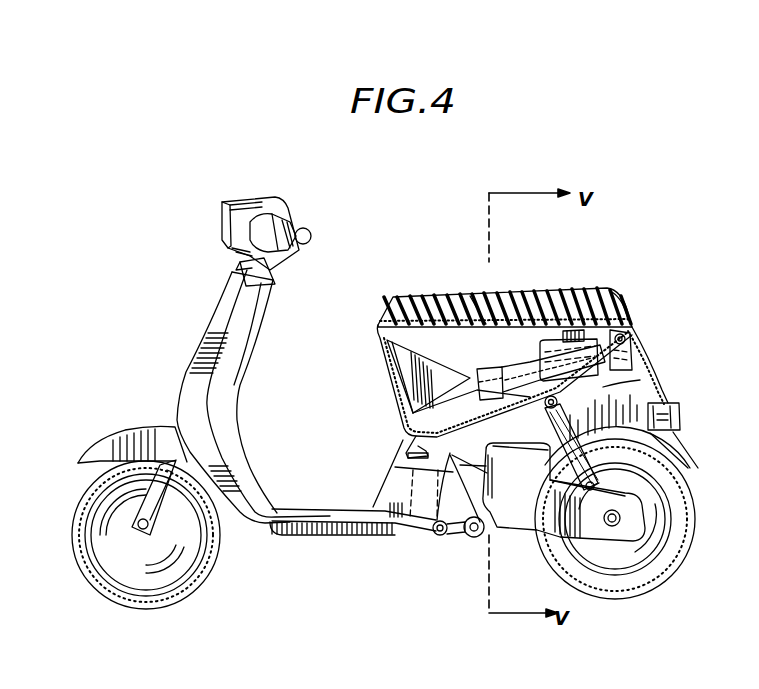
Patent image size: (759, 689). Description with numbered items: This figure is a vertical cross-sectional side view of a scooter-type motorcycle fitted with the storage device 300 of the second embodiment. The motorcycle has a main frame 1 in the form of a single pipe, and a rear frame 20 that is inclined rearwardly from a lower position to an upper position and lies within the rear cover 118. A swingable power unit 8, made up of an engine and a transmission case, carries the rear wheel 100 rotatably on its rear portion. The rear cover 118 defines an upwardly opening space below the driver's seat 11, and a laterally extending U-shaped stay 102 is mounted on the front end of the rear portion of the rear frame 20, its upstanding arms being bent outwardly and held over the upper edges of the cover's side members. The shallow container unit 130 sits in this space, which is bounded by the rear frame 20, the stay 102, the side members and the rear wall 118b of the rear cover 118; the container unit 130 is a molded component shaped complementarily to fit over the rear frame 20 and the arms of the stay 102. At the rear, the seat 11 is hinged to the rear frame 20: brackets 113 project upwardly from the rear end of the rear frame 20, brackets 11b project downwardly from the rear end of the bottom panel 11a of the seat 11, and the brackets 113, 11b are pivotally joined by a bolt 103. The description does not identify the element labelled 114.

The main frame 1 is at (372, 536).
The power unit 8 is at (517, 507).
The driver's seat 11 is at (527, 294).
The bottom panel 11a is at (494, 334).
The brackets 11b is at (632, 318).
The rear frame 20 is at (436, 536).
The rear wheel 100 is at (676, 568).
The U-shaped stay 102 is at (484, 367).
The bolt 103 is at (634, 332).
The brackets 113 is at (628, 347).
The lock device 114 is at (553, 340).
The rear cover 118 is at (388, 382).
The rear wall 118b is at (535, 378).
The container unit 130 is at (406, 437).
The storage device 300 is at (372, 365).